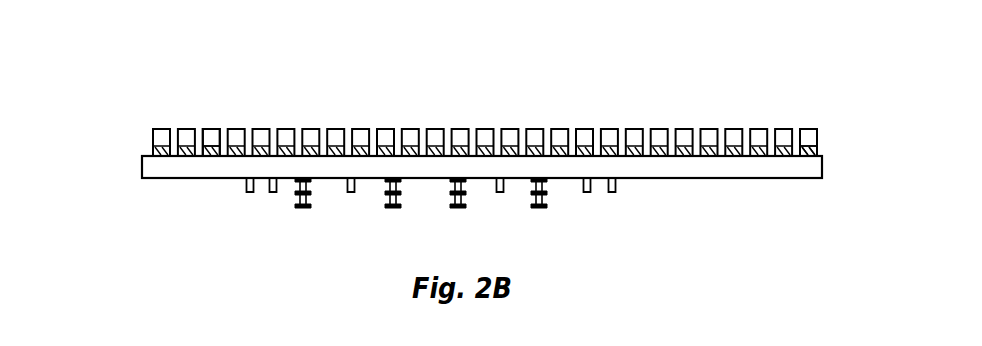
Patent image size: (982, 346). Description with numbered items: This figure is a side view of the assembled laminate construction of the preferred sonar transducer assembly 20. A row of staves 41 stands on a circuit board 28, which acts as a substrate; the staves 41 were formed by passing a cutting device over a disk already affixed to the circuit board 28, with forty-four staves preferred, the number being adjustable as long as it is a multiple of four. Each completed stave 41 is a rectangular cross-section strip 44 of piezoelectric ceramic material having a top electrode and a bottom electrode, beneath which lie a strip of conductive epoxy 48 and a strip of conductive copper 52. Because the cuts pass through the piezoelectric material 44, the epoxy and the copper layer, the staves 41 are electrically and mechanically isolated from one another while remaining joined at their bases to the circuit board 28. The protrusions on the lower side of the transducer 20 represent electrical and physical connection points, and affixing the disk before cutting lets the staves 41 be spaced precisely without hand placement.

The transducer assembly 20 is at (133, 147).
The circuit board 28 is at (777, 168).
The staves 41 is at (290, 122).
The piezoelectric ceramic strip 44 is at (211, 133).
The conductive epoxy strip 48 is at (819, 151).
The conductive copper strip 52 is at (823, 158).